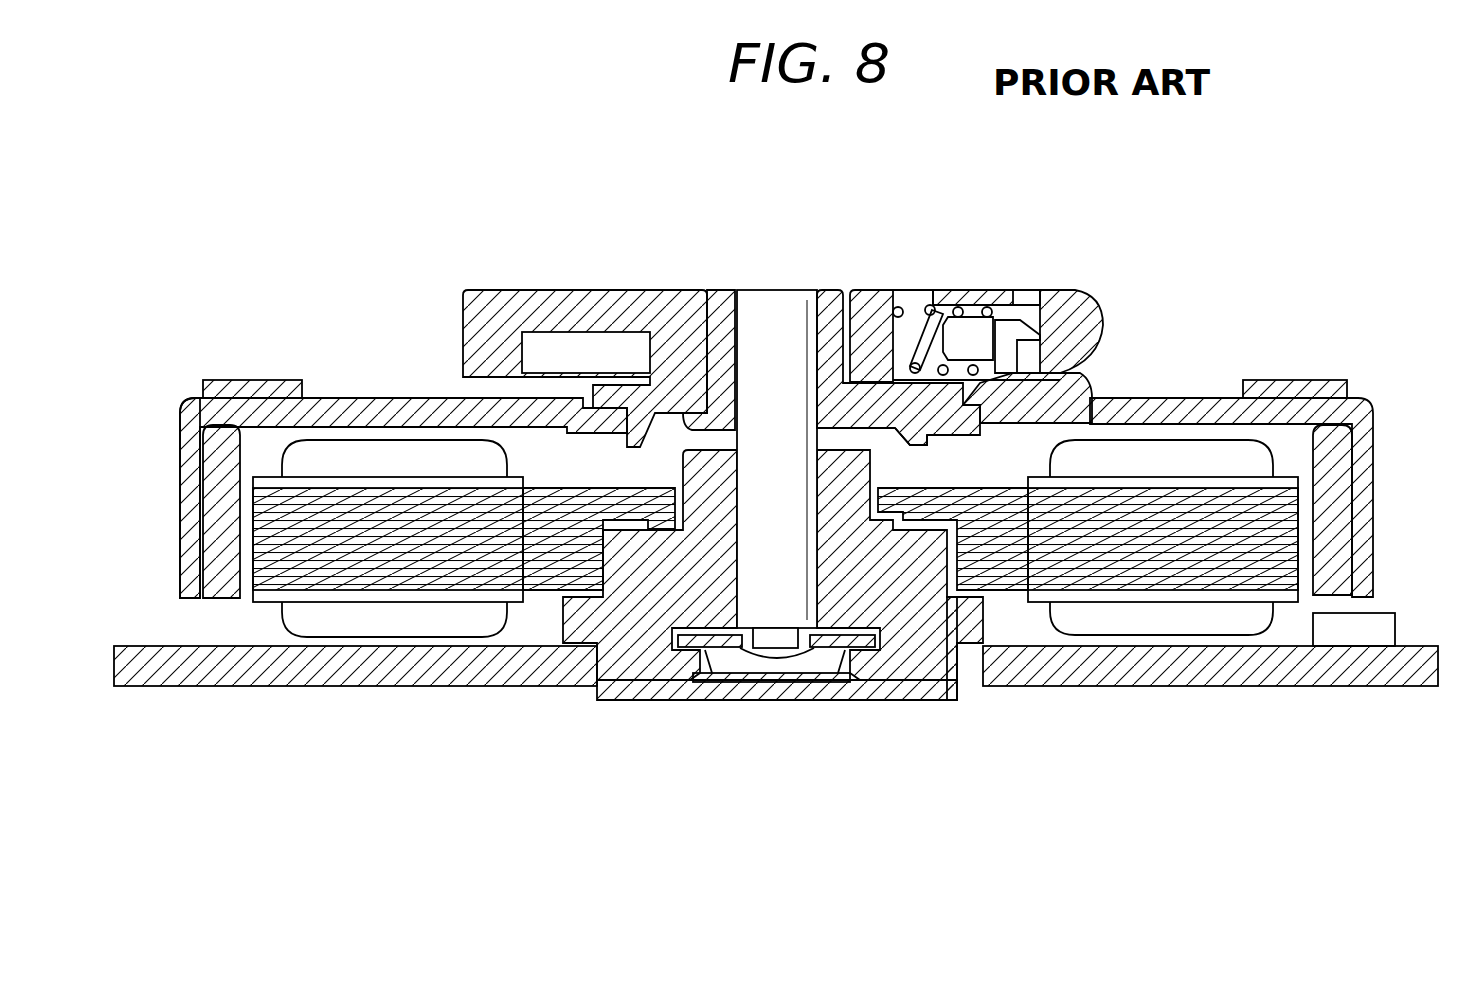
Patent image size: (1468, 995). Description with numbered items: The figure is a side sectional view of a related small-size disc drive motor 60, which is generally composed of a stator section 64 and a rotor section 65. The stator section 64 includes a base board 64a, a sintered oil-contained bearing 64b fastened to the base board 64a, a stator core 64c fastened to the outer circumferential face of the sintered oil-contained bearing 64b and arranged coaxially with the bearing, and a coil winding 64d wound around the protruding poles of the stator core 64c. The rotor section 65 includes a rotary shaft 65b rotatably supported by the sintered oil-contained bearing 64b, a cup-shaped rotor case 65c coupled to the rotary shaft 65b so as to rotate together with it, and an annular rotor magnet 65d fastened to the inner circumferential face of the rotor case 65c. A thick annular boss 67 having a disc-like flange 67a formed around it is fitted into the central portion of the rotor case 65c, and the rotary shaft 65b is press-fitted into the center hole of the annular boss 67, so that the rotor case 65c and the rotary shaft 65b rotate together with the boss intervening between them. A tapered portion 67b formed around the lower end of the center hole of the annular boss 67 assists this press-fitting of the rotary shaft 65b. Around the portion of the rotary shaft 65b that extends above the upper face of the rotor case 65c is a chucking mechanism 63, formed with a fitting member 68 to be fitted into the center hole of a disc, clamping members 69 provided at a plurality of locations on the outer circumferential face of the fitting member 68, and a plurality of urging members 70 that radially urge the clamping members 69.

The motor 60 is at (1393, 467).
The chucking mechanism 63 is at (925, 277).
The stator section 64 is at (776, 620).
The base board 64a is at (1310, 675).
The sintered oil-contained bearing 64b is at (958, 690).
The stator core 64c is at (1125, 577).
The coil winding 64d is at (1023, 769).
The rotor section 65 is at (766, 607).
The rotary shaft 65b is at (753, 611).
The rotor case 65c is at (190, 600).
The rotor magnet 65d is at (247, 600).
The annular boss 67 is at (723, 300).
The disc-like flange 67a is at (618, 392).
The tapered portion 67b is at (818, 438).
The fitting member 68 is at (873, 297).
The clamping members 69 is at (1105, 292).
The urging members 70 is at (908, 300).